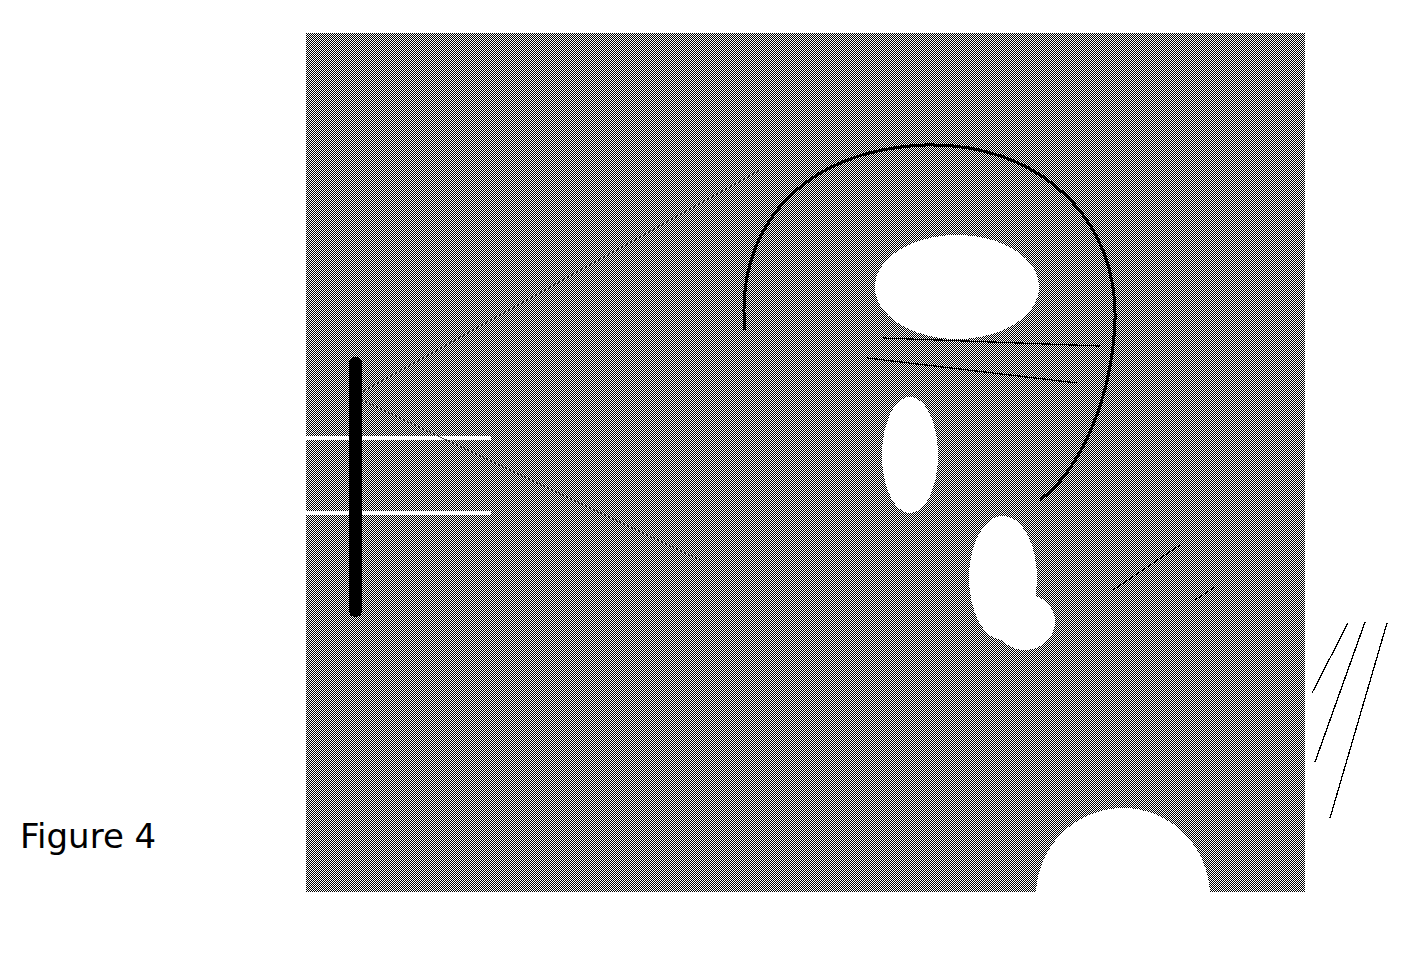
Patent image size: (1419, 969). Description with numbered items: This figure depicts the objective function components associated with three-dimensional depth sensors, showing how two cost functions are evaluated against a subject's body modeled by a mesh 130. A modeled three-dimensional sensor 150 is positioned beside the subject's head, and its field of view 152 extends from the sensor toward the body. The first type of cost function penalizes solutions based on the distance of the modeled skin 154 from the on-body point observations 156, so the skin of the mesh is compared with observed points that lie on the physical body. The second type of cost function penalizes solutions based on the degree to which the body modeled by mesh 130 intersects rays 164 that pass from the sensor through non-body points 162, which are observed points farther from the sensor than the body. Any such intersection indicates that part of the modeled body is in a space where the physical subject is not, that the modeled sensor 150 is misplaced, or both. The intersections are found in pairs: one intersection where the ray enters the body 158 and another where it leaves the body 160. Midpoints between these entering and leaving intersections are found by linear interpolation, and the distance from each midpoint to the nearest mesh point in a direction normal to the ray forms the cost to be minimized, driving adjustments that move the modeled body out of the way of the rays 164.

The mesh 130 is at (1018, 322).
The modeled 3D sensor 150 is at (347, 393).
The field of view 152 is at (720, 163).
The modeled skin 154 is at (1100, 346).
The on-body point observations 156 is at (1070, 388).
The intersection where the ray enters the body 158 is at (1180, 545).
The intersection where the ray leaves the body 160 is at (1215, 587).
The non-body points 162 is at (1354, 703).
The rays 164 is at (513, 470).